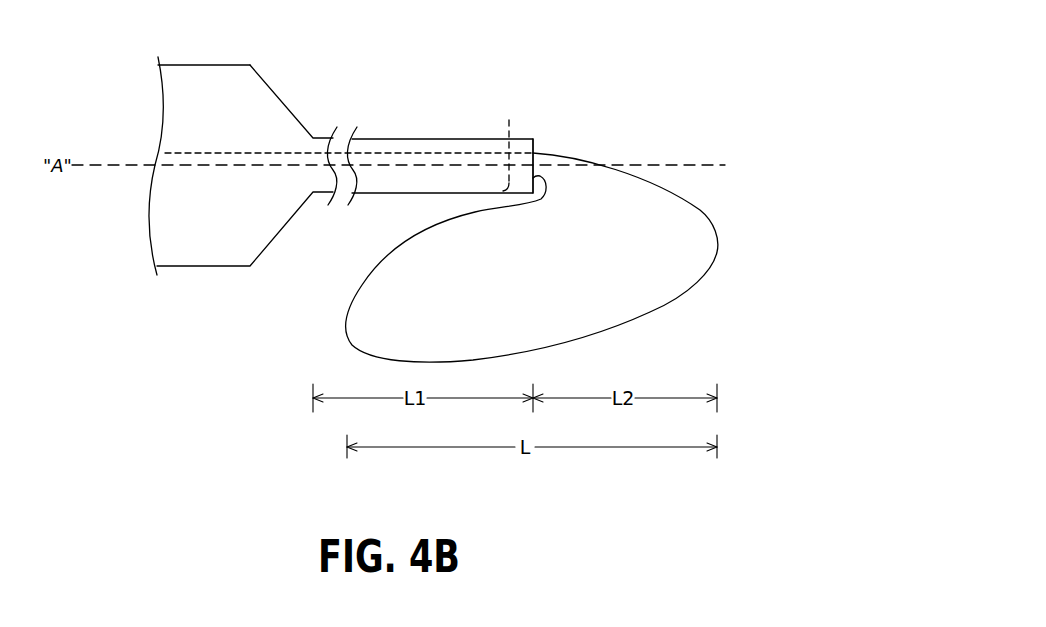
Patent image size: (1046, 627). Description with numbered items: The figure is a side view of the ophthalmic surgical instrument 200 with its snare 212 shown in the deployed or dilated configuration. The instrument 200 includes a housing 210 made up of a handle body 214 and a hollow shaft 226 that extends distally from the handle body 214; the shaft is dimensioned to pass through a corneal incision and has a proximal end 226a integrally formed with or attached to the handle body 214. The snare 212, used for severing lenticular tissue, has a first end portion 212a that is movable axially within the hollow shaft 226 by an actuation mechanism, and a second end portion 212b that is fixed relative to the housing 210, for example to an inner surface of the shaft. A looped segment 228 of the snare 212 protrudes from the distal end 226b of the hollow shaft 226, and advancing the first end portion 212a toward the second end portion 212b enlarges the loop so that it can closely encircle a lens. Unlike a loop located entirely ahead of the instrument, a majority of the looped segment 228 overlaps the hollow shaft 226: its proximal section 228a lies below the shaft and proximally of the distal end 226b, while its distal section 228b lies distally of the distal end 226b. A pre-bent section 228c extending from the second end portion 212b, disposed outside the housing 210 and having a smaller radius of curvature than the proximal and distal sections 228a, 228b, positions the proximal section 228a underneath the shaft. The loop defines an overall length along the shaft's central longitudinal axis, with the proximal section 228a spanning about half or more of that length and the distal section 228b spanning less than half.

The ophthalmic surgical instrument 200 is at (557, 40).
The housing 210 is at (244, 140).
The handle body 214 is at (224, 82).
The hollow shaft 226 is at (445, 134).
The proximal end of hollow shaft 226a is at (316, 137).
The distal end of hollow shaft 226b is at (533, 139).
The snare 212 is at (492, 194).
The first end portion of snare 212a is at (393, 140).
The second end portion of snare 212b is at (509, 120).
The looped segment 228 is at (520, 231).
The proximal section of looped segment 228a is at (358, 288).
The distal section of looped segment 228b is at (677, 180).
The pre-bent section 228c is at (545, 198).